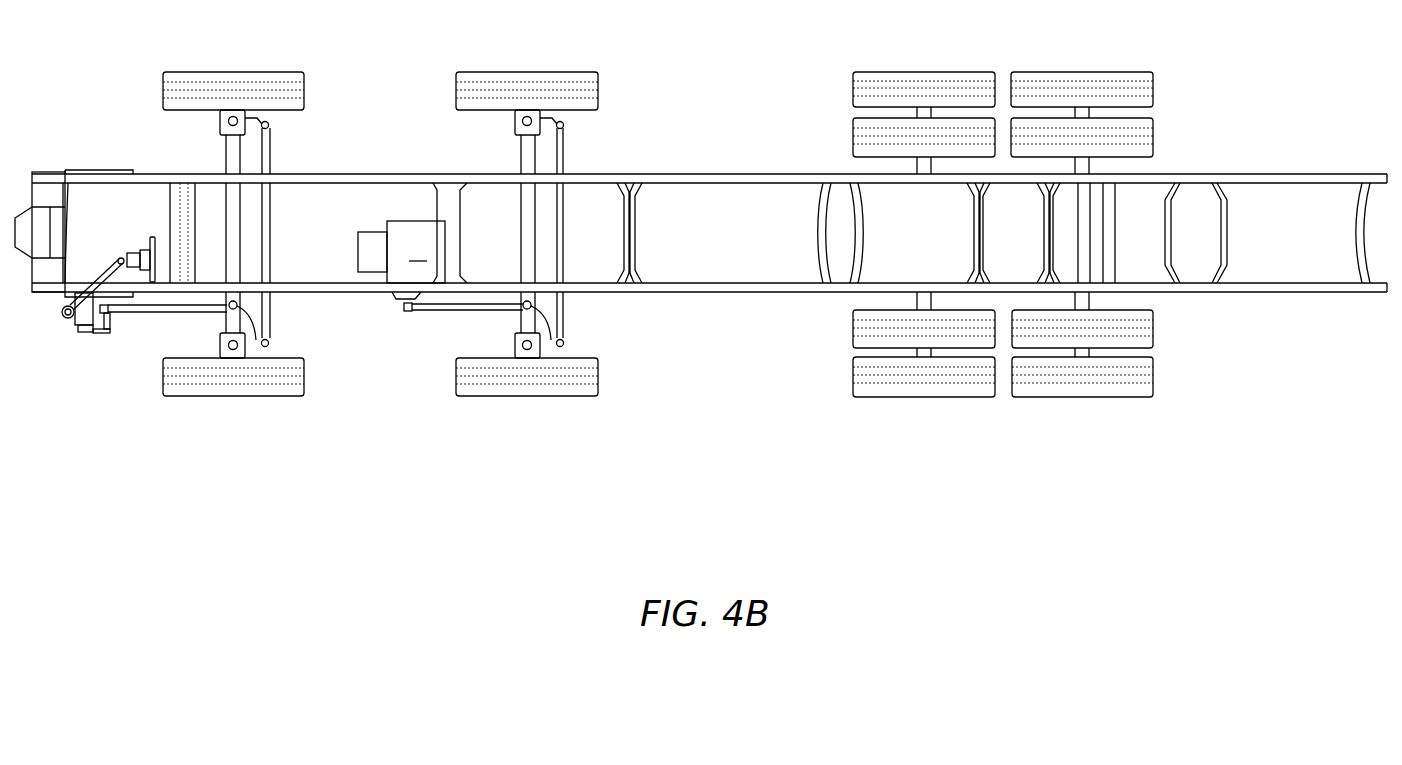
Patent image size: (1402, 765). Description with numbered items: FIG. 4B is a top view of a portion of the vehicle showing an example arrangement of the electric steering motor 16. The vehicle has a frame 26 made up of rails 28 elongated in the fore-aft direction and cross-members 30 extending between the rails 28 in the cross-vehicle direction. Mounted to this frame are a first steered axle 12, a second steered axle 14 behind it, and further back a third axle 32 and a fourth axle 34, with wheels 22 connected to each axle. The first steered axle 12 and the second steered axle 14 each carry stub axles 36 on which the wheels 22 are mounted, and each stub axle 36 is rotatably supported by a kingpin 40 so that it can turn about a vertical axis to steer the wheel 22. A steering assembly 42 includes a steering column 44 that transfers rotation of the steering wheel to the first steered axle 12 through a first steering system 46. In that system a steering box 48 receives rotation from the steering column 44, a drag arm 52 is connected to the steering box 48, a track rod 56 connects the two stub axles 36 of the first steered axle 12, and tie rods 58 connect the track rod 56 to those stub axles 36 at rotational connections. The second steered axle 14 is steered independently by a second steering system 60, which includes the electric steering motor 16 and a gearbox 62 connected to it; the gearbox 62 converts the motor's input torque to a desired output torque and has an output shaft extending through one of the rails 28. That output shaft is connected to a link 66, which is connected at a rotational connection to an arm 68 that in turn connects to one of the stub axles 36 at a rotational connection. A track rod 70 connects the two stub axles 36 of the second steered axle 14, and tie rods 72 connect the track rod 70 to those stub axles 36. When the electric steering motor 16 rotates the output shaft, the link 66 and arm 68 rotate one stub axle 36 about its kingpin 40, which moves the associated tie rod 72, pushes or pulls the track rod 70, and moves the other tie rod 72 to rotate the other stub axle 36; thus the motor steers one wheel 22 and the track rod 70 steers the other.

The first steered axle 12 is at (204, 165).
The second steered axle 14 is at (545, 257).
The electric steering motor 16 is at (358, 252).
The wheels 22 is at (187, 72).
The frame 26 is at (709, 169).
The rails 28 is at (1383, 172).
The cross-members 30 is at (968, 215).
The third axle 32 is at (910, 406).
The fourth axle 34 is at (1080, 406).
The stub axles 36 is at (218, 117).
The kingpin 40 is at (233, 116).
The steering assembly 42 is at (96, 265).
The steering column 44 is at (118, 261).
The first steering system 46 is at (92, 336).
The steering box 48 is at (61, 315).
The drag arm 52 is at (134, 314).
The track rod 56 is at (271, 199).
The tie rods 58 is at (261, 121).
The second steering system 60 is at (408, 314).
The gearbox 62 is at (416, 260).
The arm 66 is at (430, 312).
The curved link 68 is at (548, 314).
The track rod 70 is at (566, 200).
The tie rods 72 is at (556, 121).